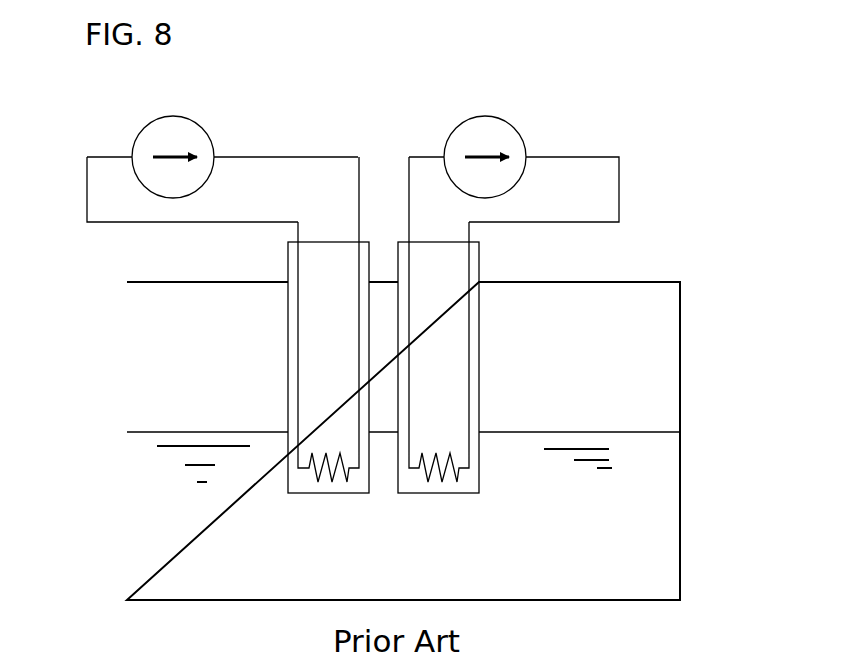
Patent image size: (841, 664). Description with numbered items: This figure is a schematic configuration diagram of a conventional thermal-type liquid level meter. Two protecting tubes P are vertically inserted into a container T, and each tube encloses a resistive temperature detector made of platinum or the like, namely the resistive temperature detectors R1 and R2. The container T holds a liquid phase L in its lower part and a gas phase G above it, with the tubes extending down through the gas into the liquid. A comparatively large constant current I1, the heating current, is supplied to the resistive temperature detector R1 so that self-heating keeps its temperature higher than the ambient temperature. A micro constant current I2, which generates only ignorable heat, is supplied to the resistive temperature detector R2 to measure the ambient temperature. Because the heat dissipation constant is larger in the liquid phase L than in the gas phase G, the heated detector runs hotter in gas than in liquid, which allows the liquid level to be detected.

The container T is at (658, 282).
The liquid phase L is at (172, 540).
The gas phase G is at (163, 396).
The protecting tube P is at (289, 355).
The resistive temperature detector R1 is at (328, 319).
The resistive temperature detector R2 is at (439, 319).
The constant current I1 is at (318, 138).
The micro constant current I2 is at (608, 143).